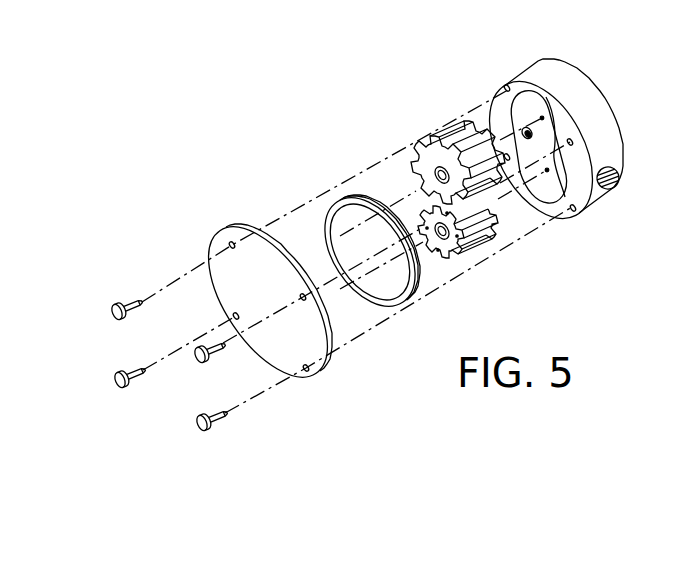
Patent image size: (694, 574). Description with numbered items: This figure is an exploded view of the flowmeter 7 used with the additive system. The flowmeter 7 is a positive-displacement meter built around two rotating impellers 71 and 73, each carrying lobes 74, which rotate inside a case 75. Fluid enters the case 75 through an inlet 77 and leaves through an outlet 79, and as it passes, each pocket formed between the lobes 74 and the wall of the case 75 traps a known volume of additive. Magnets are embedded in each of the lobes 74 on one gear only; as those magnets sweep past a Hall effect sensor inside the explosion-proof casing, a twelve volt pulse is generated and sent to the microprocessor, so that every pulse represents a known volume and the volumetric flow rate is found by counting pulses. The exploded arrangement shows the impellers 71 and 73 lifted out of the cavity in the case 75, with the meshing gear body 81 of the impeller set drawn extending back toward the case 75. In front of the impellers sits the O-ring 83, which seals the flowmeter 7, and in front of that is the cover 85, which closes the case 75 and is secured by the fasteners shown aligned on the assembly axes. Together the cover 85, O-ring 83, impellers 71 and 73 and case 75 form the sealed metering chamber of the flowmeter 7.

The flowmeter 7 is at (658, 150).
The rotating impeller 71 is at (452, 258).
The rotating impeller 73 is at (442, 139).
The lobes 74 is at (446, 259).
The case 75 is at (618, 128).
The inlet 77 is at (525, 132).
The outlet 79 is at (616, 188).
The gear body 81 is at (479, 240).
The O-ring 83 is at (347, 197).
The cover 85 is at (229, 237).